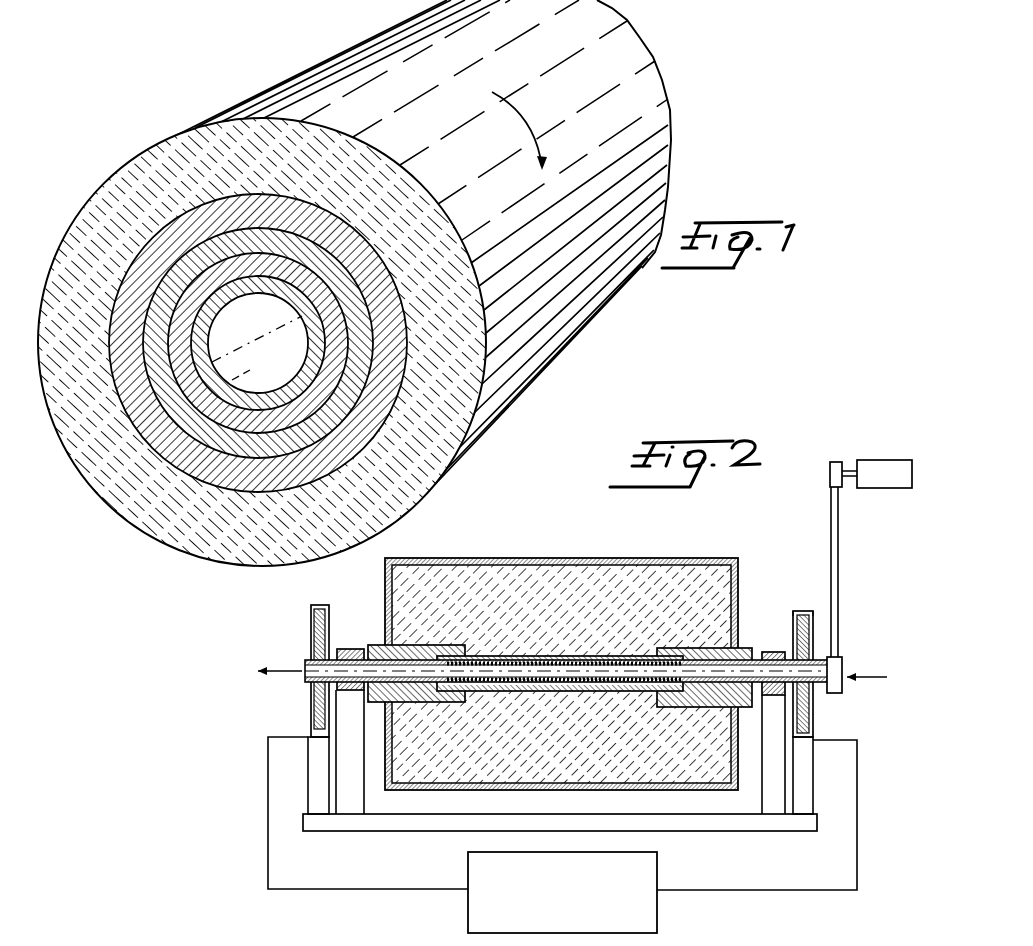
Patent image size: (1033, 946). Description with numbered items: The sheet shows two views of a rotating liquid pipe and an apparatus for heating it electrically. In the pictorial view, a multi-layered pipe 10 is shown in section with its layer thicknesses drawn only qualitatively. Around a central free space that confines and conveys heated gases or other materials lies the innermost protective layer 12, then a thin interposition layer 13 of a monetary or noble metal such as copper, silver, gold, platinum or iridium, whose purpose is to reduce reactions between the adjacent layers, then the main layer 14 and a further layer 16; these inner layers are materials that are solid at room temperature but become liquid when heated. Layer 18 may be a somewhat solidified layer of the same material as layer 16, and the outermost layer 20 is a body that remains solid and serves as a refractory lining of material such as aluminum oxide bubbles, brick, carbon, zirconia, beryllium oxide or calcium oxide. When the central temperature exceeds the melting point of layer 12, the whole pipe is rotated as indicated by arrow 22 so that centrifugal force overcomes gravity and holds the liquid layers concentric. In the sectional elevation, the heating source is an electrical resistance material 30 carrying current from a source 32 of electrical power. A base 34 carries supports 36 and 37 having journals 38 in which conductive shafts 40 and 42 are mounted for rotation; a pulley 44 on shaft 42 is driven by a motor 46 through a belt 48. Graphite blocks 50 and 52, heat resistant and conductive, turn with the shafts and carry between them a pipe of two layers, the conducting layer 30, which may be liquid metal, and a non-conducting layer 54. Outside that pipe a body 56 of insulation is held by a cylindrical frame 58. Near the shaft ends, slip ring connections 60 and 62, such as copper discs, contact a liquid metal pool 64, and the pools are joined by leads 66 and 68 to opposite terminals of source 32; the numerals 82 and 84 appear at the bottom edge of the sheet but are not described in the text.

In FIG. 1, the multi-layered pipe 10 is at (100, 188).
In FIG. 1, the innermost layer 12 is at (203, 332).
In FIG. 1, the interposition layer 13 is at (280, 397).
In FIG. 1, the main layer 14 is at (177, 328).
In FIG. 1, the inner concentric layer 16 is at (325, 425).
In FIG. 1, the somewhat solidified layer 18 is at (140, 427).
In FIG. 1, the refractory lining 20 is at (160, 527).
In FIG. 1, the rotation arrow 22 is at (492, 92).
In FIG. 2, the electrical resistance material 30 is at (528, 659).
In FIG. 2, the source of electrical power 32 is at (657, 880).
In FIG. 2, the base 34 is at (812, 827).
In FIG. 2, the support 36 is at (763, 803).
In FIG. 2, the support 37 is at (348, 767).
In FIG. 2, the journals 38 is at (352, 648).
In FIG. 2, the shaft 40 is at (305, 664).
In FIG. 2, the shaft 42 is at (815, 616).
In FIG. 2, the pulley 44 is at (842, 686).
In FIG. 2, the motor 46 is at (890, 460).
In FIG. 2, the belt 48 is at (838, 518).
In FIG. 2, the block 50 is at (402, 647).
In FIG. 2, the block 52 is at (712, 647).
In FIG. 2, the electrically non-conducting layer 54 is at (530, 577).
In FIG. 2, the body of insulation 56 is at (510, 660).
In FIG. 2, the cylindrical frame 58 is at (447, 558).
In FIG. 2, the slip ring connection 60 is at (313, 702).
In FIG. 2, the slip ring connection 62 is at (813, 720).
In FIG. 2, the liquid metal pool 64 is at (313, 733).
In FIG. 2, the lead 66 is at (442, 888).
In FIG. 2, the lead 68 is at (790, 890).
In FIG. 2, the lead 82 is at (190, 945).
In FIG. 2, the lead 84 is at (408, 945).